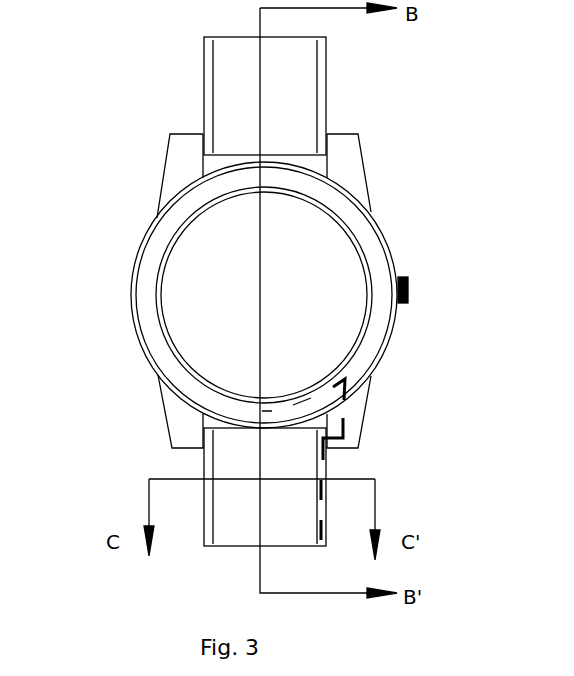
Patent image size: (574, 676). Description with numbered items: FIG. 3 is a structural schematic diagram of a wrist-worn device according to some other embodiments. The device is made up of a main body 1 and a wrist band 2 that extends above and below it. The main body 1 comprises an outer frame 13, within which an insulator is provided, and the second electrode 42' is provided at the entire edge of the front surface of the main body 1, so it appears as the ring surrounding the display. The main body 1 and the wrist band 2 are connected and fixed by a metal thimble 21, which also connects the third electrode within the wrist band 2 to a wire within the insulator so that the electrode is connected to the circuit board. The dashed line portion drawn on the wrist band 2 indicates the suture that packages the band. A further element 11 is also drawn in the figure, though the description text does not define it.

The main body 1 is at (190, 237).
The wrist band 2 is at (240, 93).
The flexible sensor strip 11 is at (352, 421).
The outer frame 13 is at (178, 167).
The metal thimble 21 is at (198, 430).
The second electrode 42' is at (222, 295).